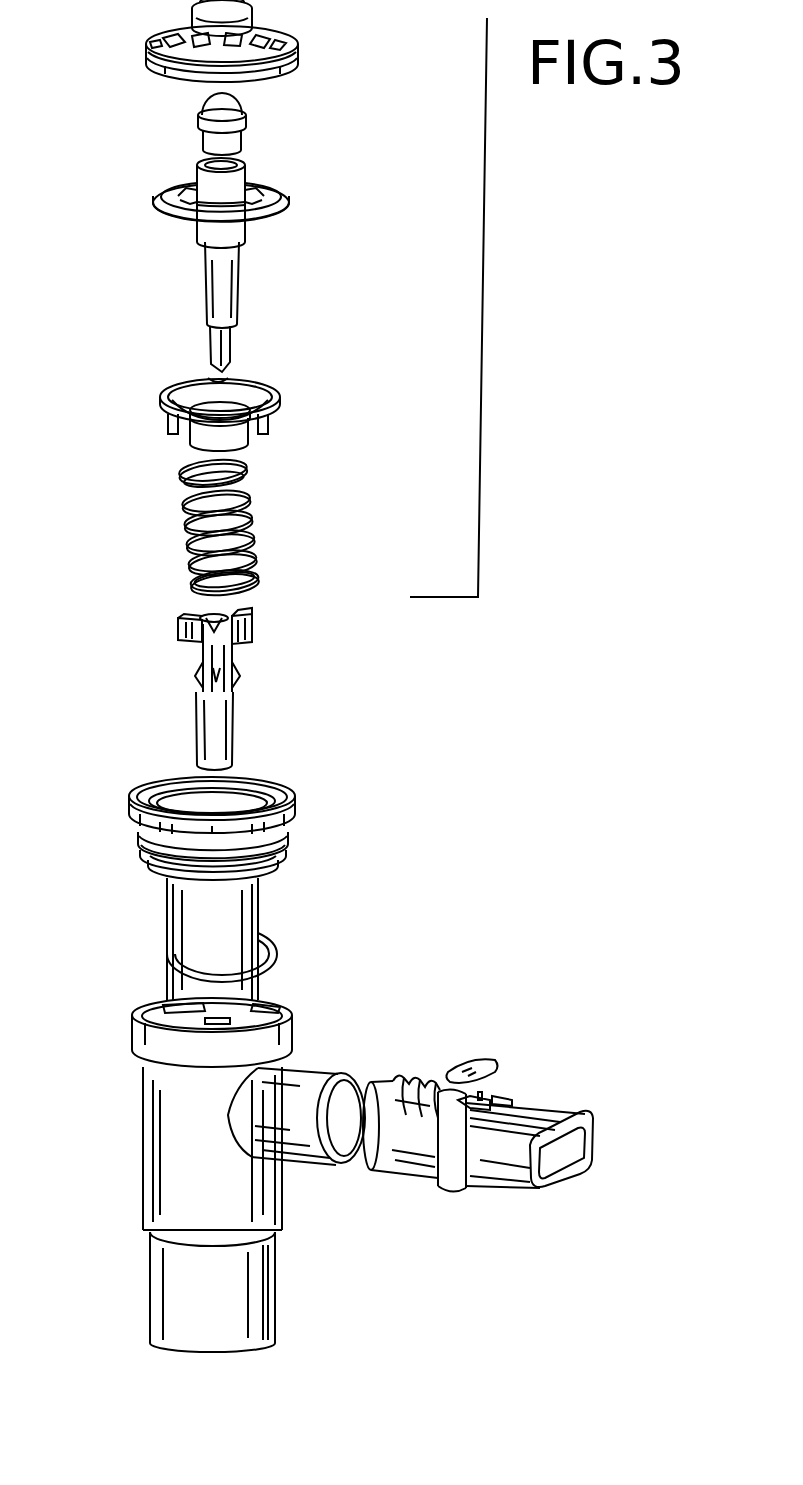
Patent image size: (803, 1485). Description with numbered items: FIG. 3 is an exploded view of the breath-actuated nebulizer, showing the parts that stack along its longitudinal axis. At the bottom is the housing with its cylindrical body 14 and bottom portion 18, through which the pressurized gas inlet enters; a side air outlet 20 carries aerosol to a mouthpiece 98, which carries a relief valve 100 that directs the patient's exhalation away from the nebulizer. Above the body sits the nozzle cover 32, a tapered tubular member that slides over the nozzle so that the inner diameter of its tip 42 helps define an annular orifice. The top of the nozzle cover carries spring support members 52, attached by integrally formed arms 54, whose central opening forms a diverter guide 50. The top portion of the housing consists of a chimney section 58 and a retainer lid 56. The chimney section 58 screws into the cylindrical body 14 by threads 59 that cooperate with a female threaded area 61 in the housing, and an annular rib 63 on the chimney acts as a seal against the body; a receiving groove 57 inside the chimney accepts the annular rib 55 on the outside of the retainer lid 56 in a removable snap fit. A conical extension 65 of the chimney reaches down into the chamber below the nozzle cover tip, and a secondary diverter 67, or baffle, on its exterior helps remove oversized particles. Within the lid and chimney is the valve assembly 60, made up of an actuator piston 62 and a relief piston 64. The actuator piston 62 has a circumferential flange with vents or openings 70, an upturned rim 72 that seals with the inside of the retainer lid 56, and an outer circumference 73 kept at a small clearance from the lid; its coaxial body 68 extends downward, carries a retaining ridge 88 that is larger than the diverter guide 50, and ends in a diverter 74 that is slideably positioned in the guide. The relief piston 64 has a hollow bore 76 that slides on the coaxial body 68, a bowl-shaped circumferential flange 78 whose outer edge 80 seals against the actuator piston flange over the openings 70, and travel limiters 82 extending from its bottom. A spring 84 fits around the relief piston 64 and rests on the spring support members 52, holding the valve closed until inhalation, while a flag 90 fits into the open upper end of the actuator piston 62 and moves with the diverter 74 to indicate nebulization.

The cylindrical body 14 is at (259, 1149).
The bottom portion 18 is at (270, 1305).
The air outlet 20 is at (298, 1068).
The nozzle cover 32 is at (242, 718).
The tip of the nozzle cover 42 is at (235, 672).
The diverter guide 50 is at (211, 634).
The spring support members 52 is at (195, 645).
The arms 54 is at (240, 653).
The annular rib 55 is at (148, 60).
The retainer lid 56 is at (227, 41).
The receiving groove 57 is at (185, 775).
The chimney section 58 is at (220, 867).
The threads 59 is at (145, 842).
The valve assembly 60 is at (488, 322).
The female threaded area 61 is at (258, 1003).
The actuator piston 62 is at (227, 252).
The annular rib 63 is at (160, 860).
The relief piston 64 is at (247, 390).
The conical extension 65 is at (252, 880).
The secondary diverter 67 is at (265, 960).
The coaxial body 68 is at (250, 228).
The openings 70 is at (185, 193).
The upturned rim 72 is at (185, 187).
The outer circumference 73 is at (172, 211).
The diverter 74 is at (212, 370).
The hollow bore 76 is at (235, 405).
The circumferential flange 78 is at (185, 400).
The outer edge 80 is at (272, 390).
The travel limiters 82 is at (252, 390).
The spring 84 is at (262, 548).
The retaining ridge 88 is at (262, 331).
The flag 90 is at (262, 122).
The mouthpiece 98 is at (508, 1096).
The relief valve 100 is at (492, 1052).